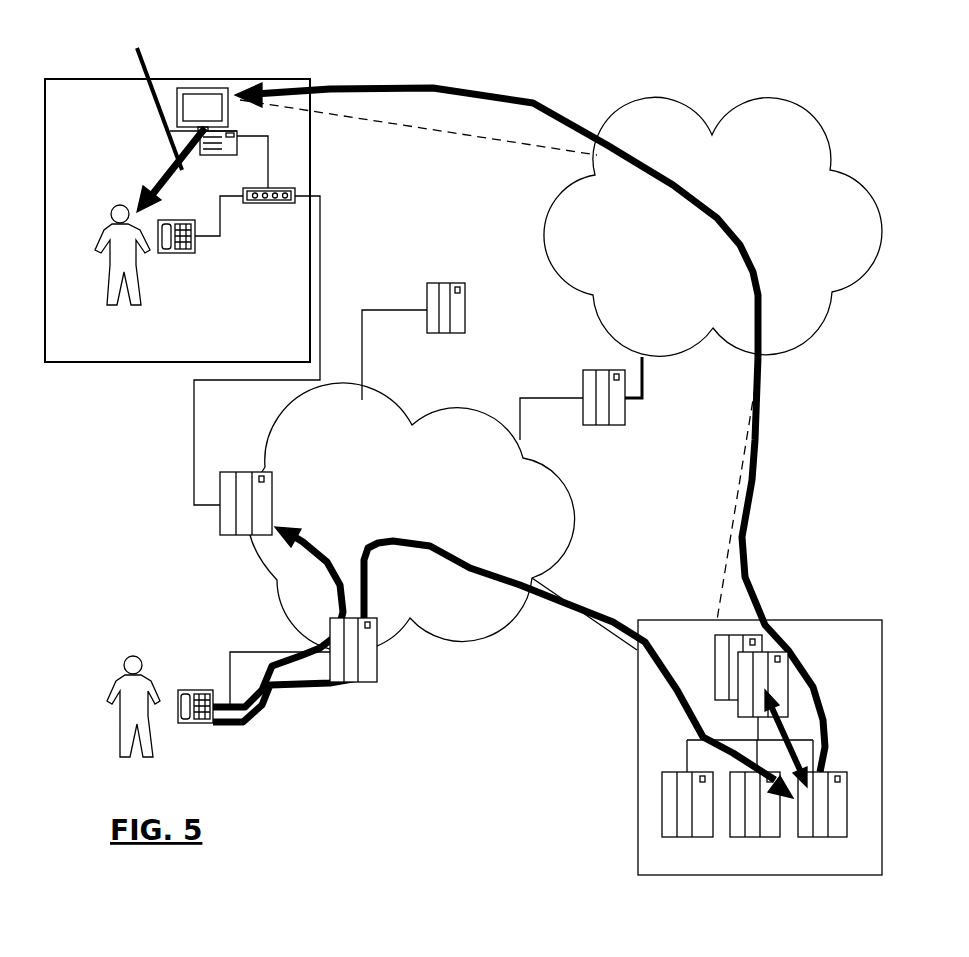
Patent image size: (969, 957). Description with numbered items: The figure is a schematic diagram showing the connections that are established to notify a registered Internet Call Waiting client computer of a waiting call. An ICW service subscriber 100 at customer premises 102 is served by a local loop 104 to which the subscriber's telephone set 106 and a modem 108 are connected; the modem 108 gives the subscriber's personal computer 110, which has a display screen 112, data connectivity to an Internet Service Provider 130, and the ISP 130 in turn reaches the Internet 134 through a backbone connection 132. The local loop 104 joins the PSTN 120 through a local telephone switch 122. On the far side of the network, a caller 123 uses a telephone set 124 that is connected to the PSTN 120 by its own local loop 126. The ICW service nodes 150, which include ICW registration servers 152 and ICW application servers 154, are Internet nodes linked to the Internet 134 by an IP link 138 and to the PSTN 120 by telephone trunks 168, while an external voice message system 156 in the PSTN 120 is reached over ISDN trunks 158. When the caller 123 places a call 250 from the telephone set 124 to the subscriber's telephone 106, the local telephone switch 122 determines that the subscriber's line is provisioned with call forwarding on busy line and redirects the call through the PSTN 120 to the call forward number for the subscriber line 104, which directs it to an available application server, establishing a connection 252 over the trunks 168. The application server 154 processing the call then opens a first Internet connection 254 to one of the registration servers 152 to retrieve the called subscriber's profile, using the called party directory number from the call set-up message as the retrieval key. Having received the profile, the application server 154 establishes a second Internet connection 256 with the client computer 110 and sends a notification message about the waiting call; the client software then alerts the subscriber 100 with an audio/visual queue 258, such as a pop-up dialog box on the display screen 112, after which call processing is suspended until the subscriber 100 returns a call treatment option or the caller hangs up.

The ICW service subscriber 100 is at (100, 228).
The customer premises 102 is at (130, 365).
The local loop 104 is at (322, 228).
The telephone set 106 is at (196, 247).
The modem 108 is at (293, 185).
The personal computer 110 is at (200, 135).
The display screen 112 is at (177, 100).
The Public Switched Telephone Network 120 is at (580, 530).
The local telephone switch 122 is at (220, 512).
The caller 123 is at (132, 758).
The caller's telephone set 124 is at (185, 688).
The local loop 126 is at (268, 665).
The Internet Service Provider 130 is at (583, 378).
The backbone connection 132 is at (642, 380).
The Internet 134 is at (823, 317).
The IP link 138 is at (750, 520).
The ICW service nodes 150 is at (637, 723).
The ICW registration servers 152 is at (791, 677).
The ICW application servers 154 is at (662, 806).
The voice message system 156 is at (465, 308).
The ISDN trunks 158 is at (362, 343).
The telephone trunks 168 is at (577, 588).
The call 250 is at (307, 652).
The connection 252 is at (553, 608).
The first Internet connection 254 is at (757, 740).
The second Internet connection 256 is at (752, 487).
The audio/visual queue 258 is at (432, 180).